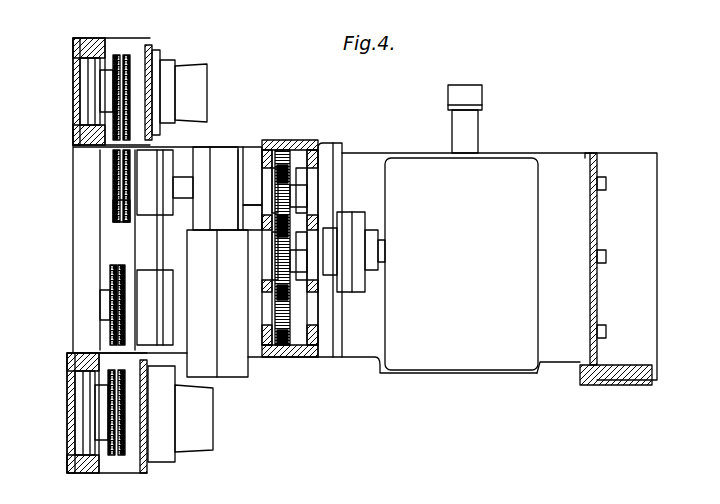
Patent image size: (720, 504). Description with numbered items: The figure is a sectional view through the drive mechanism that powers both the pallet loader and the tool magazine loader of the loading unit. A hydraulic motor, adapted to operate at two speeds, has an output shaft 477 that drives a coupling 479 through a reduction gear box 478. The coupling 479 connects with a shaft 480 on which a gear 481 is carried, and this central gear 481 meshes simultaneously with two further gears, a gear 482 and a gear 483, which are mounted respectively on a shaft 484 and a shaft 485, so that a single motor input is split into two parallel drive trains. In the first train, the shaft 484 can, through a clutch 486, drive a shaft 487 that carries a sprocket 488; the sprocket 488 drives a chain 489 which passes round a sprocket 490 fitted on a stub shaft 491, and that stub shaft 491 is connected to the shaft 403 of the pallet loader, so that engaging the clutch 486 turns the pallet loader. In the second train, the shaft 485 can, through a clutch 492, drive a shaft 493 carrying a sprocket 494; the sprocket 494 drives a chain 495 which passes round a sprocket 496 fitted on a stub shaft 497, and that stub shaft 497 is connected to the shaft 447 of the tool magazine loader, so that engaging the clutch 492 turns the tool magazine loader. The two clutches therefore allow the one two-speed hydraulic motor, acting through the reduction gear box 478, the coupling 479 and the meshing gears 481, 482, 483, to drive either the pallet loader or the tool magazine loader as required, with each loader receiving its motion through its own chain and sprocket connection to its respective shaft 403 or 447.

The shaft of the pallet loader 403 is at (205, 428).
The shaft of the tool magazine loader 447 is at (193, 78).
The output shaft 477 is at (468, 130).
The reduction gear box 478 is at (468, 355).
The coupling 479 is at (368, 222).
The shaft 480 is at (318, 220).
The gear 481 is at (313, 282).
The gear 482 is at (310, 350).
The gear 483 is at (300, 150).
The shaft 484 is at (258, 357).
The shaft 485 is at (258, 185).
The clutch 486 is at (232, 370).
The shaft 487 is at (112, 296).
The sprocket 488 is at (110, 316).
The chain 489 is at (132, 345).
The sprocket 490 is at (110, 452).
The stub shaft 491 is at (132, 427).
The clutch 492 is at (224, 155).
The shaft 493 is at (113, 190).
The sprocket 494 is at (116, 208).
The chain 495 is at (113, 170).
The sprocket 496 is at (124, 58).
The stub shaft 497 is at (148, 60).